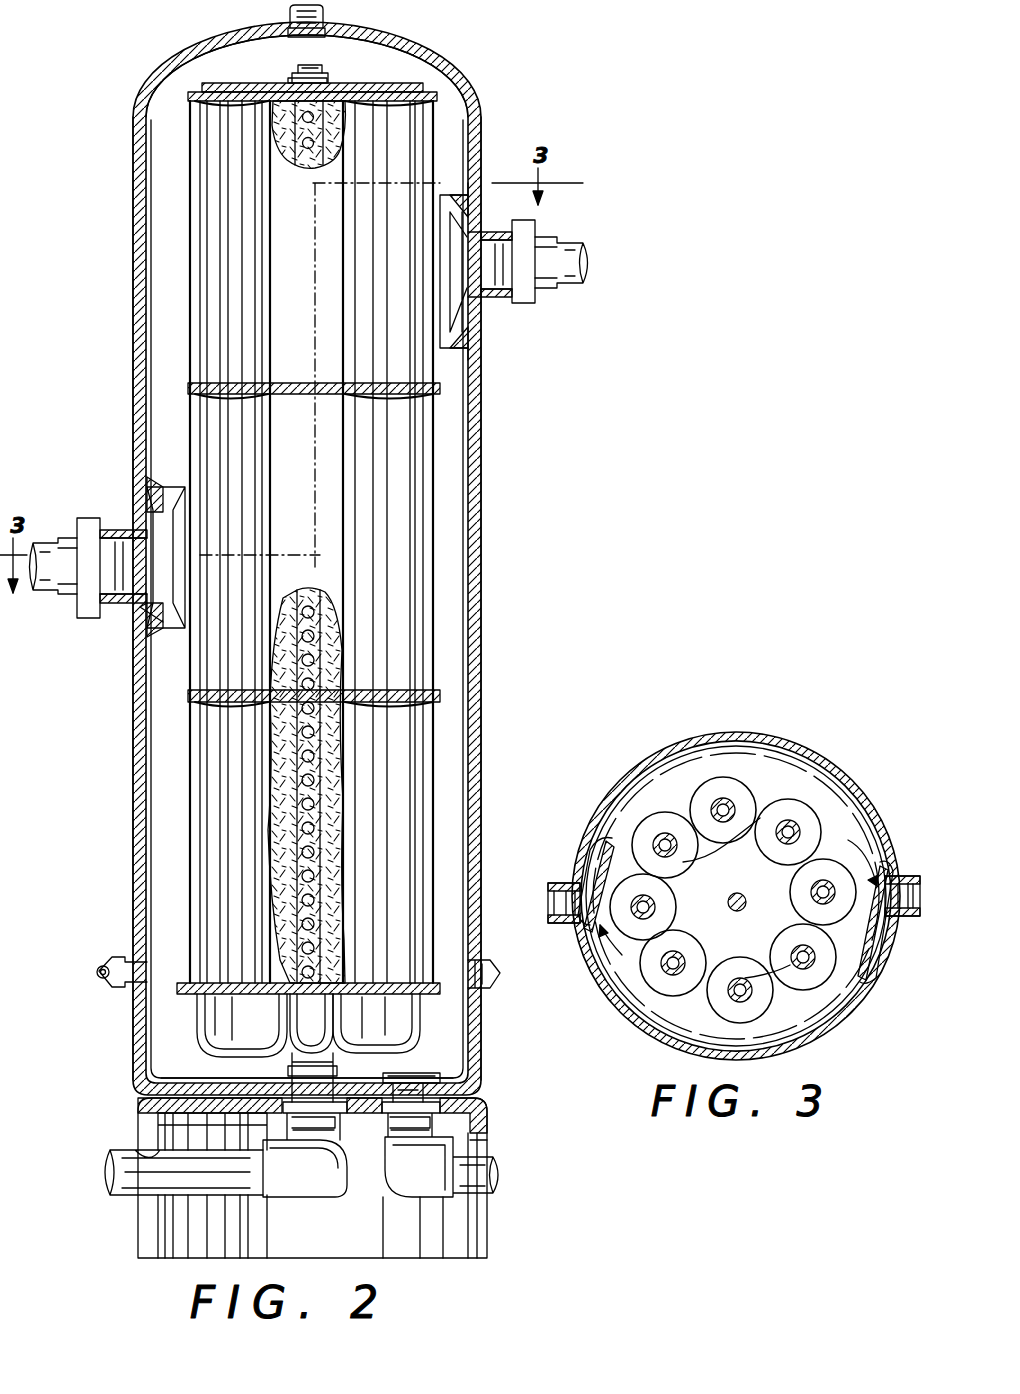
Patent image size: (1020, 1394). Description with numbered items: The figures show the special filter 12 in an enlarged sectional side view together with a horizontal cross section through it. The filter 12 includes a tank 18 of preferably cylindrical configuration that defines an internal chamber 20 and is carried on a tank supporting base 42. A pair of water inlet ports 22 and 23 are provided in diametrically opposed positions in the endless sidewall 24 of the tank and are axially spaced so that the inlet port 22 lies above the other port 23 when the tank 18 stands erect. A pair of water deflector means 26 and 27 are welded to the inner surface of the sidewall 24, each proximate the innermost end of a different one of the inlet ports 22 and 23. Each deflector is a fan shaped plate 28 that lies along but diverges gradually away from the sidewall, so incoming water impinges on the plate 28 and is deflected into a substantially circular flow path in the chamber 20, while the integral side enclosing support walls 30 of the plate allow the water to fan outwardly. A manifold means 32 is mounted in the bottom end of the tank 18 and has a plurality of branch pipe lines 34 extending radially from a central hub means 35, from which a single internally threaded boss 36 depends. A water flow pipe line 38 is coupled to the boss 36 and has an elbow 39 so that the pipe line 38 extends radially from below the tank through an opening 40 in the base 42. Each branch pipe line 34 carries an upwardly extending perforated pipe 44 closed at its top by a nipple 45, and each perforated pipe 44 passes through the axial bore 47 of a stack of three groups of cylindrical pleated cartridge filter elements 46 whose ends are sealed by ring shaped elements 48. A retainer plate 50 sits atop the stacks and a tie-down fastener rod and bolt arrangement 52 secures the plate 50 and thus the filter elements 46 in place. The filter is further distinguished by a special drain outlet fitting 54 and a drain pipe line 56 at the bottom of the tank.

In FIG. 2, the filter 12 is at (500, 530).
In FIG. 3, the filter 12 is at (840, 762).
In FIG. 2, the tank 18 is at (483, 590).
In FIG. 2, the internal chamber 20 is at (472, 730).
In FIG. 3, the internal chamber 20 is at (848, 812).
In FIG. 2, the water inlet port 22 is at (506, 298).
In FIG. 3, the water inlet port 22 is at (900, 884).
In FIG. 2, the water inlet port 23 is at (118, 530).
In FIG. 3, the water inlet port 23 is at (577, 920).
In FIG. 2, the endless sidewall 24 is at (135, 783).
In FIG. 3, the endless sidewall 24 is at (823, 1036).
In FIG. 2, the water deflector means 26 is at (470, 218).
In FIG. 3, the water deflector means 26 is at (855, 850).
In FIG. 2, the water deflector means 27 is at (147, 641).
In FIG. 3, the water deflector means 27 is at (617, 954).
In FIG. 2, the fan shaped plate 28 is at (455, 252).
In FIG. 3, the fan shaped plate 28 is at (610, 843).
In FIG. 2, the side enclosing support wall 30 is at (462, 210).
In FIG. 3, the side enclosing support wall 30 is at (592, 858).
In FIG. 2, the manifold means 32 is at (188, 1047).
In FIG. 2, the branch pipe line 34 is at (300, 1040).
In FIG. 2, the central hub means 35 is at (298, 1063).
In FIG. 2, the internally threaded boss 36 is at (337, 1071).
In FIG. 2, the water flow pipe line 38 is at (137, 1185).
In FIG. 2, the elbow 39 is at (310, 1192).
In FIG. 2, the opening 40 is at (143, 1148).
In FIG. 2, the tank supporting base 42 is at (487, 1128).
In FIG. 2, the perforated pipe 44 is at (345, 125).
In FIG. 3, the perforated pipe 44 is at (667, 840).
In FIG. 2, the nipple 45 is at (326, 92).
In FIG. 2, the cartridge filter element 46 is at (262, 312).
In FIG. 3, the cartridge filter element 46 is at (685, 848).
In FIG. 2, the axial bore 47 is at (297, 777).
In FIG. 3, the axial bore 47 is at (790, 830).
In FIG. 2, the ring shaped element 48 is at (438, 96).
In FIG. 2, the retainer plate 50 is at (410, 98).
In FIG. 2, the tie-down fastener rod and bolt arrangement 52 is at (299, 76).
In FIG. 3, the tie-down fastener rod and bolt arrangement 52 is at (745, 898).
In FIG. 2, the drain outlet fitting 54 is at (428, 1073).
In FIG. 2, the drain pipe line 56 is at (495, 1155).